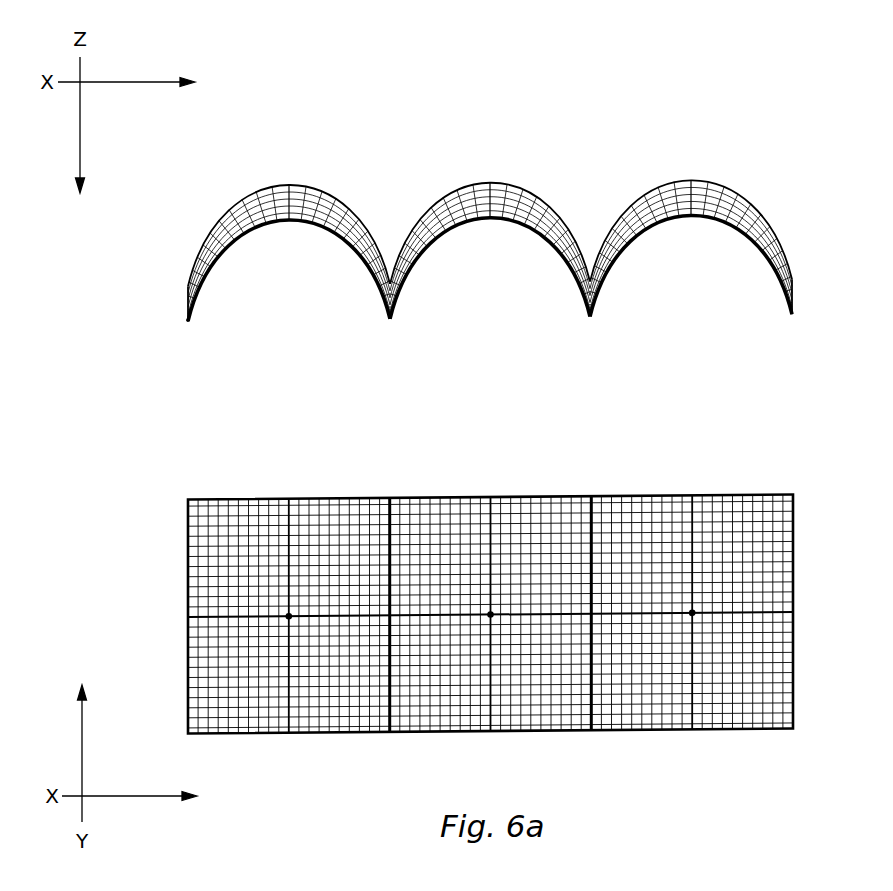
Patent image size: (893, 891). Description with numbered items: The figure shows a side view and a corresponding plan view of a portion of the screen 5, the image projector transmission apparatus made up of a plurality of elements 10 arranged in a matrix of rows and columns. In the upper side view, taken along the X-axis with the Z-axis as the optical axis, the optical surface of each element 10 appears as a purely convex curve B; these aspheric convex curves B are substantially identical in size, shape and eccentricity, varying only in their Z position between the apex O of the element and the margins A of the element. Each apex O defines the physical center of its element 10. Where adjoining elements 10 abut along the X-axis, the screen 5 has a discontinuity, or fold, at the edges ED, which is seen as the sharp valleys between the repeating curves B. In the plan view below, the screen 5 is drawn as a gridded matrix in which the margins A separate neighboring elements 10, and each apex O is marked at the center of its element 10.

The image projector transmission apparatus 5 is at (773, 496).
The element 10 is at (238, 503).
The margins A is at (390, 497).
The apex O is at (289, 185).
The edges ED is at (189, 321).
The aspheric convex curves B is at (760, 216).